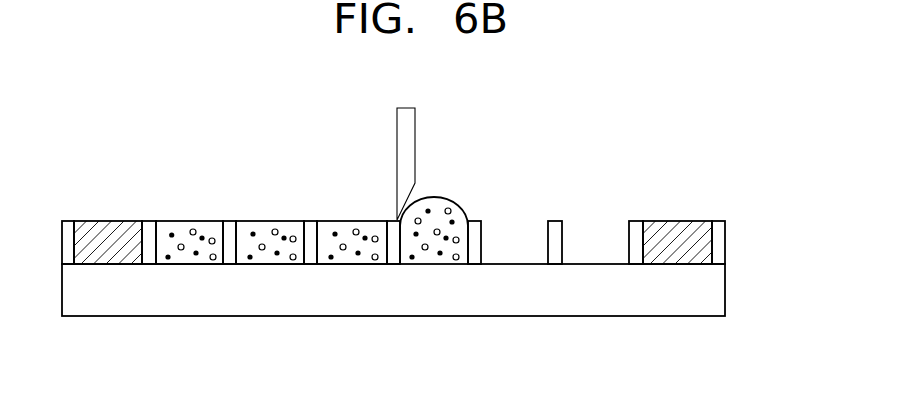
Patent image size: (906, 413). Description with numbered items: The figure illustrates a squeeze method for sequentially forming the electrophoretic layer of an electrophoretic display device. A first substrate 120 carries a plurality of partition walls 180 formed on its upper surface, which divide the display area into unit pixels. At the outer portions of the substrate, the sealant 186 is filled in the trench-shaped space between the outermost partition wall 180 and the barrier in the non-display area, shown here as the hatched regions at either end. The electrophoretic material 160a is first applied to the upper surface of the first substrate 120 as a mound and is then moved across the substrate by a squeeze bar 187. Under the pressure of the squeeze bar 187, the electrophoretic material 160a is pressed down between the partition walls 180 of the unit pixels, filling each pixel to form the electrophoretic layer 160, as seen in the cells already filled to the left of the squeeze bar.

The first substrate 120 is at (532, 300).
The electrophoretic layer 160 is at (246, 228).
The electrophoretic material 160a is at (445, 198).
The partition wall 180 is at (637, 228).
The sealant 186 is at (685, 228).
The squeeze bar 187 is at (402, 125).